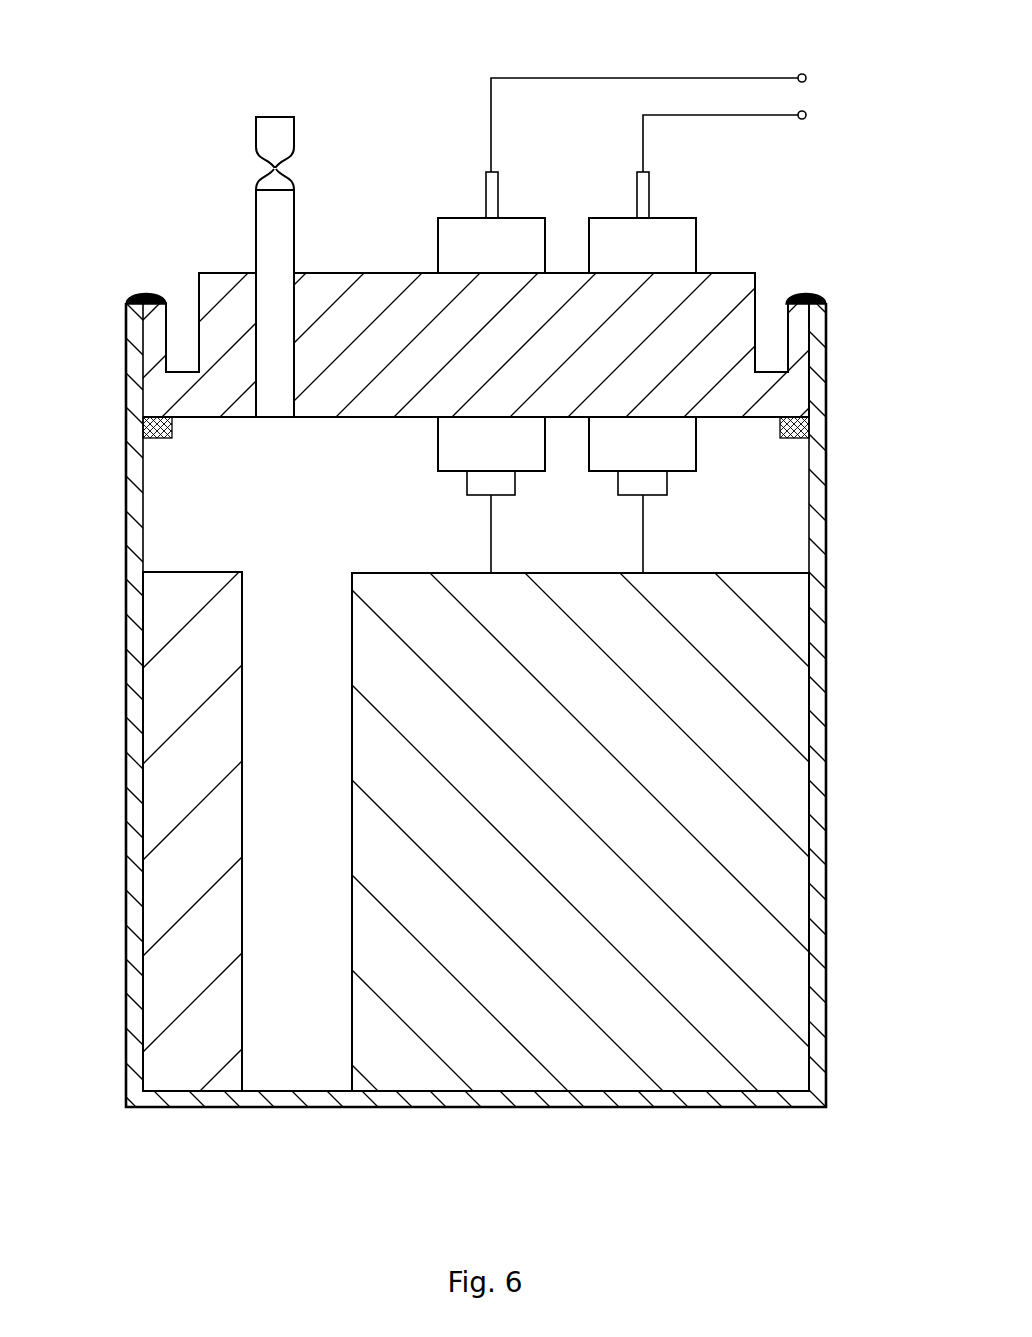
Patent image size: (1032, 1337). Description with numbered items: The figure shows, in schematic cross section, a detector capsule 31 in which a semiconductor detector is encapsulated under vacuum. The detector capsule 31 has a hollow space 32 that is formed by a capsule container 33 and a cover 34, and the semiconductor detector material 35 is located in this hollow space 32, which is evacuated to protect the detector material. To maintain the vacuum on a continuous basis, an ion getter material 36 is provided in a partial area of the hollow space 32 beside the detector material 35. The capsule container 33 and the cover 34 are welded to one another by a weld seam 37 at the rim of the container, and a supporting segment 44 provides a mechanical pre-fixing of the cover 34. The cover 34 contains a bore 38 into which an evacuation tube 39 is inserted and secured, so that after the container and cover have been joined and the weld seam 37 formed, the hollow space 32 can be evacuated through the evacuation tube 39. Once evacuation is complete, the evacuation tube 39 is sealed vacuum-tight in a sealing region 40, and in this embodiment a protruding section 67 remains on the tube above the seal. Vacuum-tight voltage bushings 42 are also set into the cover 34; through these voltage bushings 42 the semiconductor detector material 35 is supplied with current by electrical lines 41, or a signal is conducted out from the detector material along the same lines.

The detector capsule 31 is at (412, 1126).
The hollow space 32 is at (276, 867).
The capsule container 33 is at (128, 690).
The cover 34 is at (377, 292).
The semiconductor detector material 35 is at (585, 1060).
The ion getter material 36 is at (188, 1058).
The weld seam 37 is at (146, 292).
The bore 38 is at (258, 385).
The evacuation tube 39 is at (256, 232).
The sealing region 40 is at (277, 166).
The electrical lines 41 is at (648, 78).
The voltage bushings 42 is at (457, 233).
The supporting segment 44 is at (143, 424).
The protruding section 67 is at (272, 123).